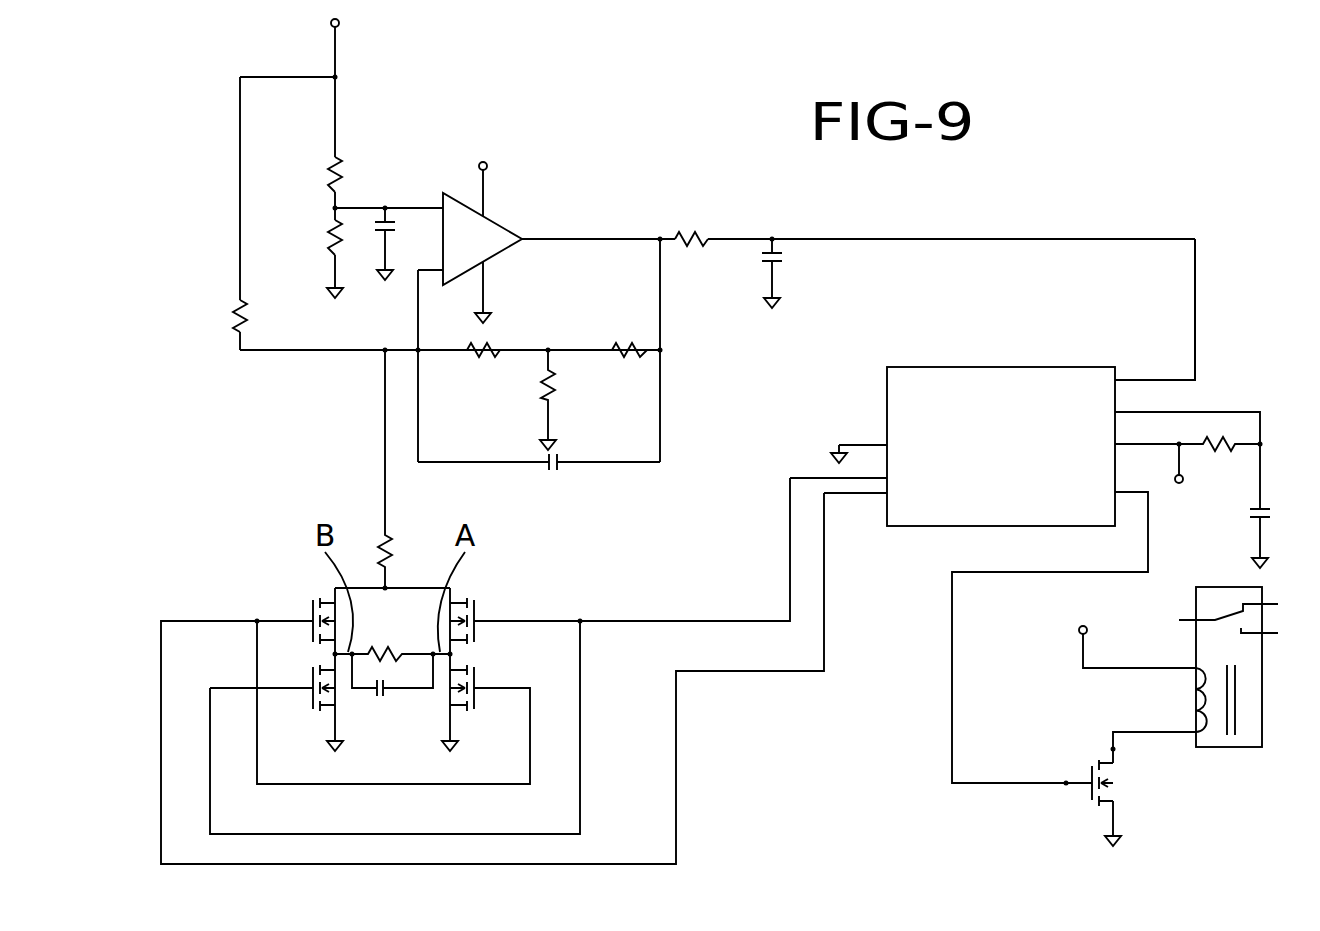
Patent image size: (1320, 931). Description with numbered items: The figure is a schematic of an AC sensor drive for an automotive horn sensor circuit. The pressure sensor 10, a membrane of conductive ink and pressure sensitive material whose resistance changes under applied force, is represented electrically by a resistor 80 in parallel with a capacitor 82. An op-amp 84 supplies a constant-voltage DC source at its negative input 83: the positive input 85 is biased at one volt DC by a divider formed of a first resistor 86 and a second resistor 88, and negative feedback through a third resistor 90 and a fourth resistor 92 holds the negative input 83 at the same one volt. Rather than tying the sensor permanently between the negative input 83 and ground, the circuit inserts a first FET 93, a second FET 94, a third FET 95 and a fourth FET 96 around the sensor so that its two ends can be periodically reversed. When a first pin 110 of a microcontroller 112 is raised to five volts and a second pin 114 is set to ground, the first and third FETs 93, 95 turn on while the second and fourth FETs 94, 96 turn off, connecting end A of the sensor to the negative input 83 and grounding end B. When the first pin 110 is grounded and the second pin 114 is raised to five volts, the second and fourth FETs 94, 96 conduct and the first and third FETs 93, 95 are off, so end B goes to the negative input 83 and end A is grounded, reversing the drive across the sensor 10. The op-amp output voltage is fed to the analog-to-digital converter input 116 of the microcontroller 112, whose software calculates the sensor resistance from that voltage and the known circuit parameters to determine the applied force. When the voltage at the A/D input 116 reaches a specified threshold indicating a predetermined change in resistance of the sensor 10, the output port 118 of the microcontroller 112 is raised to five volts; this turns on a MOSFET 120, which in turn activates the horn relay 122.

The sensor 10 is at (400, 672).
The resistor 80 is at (386, 652).
The capacitor 82 is at (377, 697).
The negative input 83 is at (433, 272).
The op-amp 84 is at (498, 226).
The positive input 85 is at (438, 208).
The first resistor 86 is at (338, 178).
The second resistor 88 is at (328, 233).
The third resistor 90 is at (477, 357).
The fourth resistor 92 is at (623, 357).
The first FET 93 is at (474, 608).
The second FET 94 is at (474, 680).
The third FET 95 is at (313, 697).
The fourth FET 96 is at (313, 610).
The first pin 110 is at (887, 478).
The microcontroller 112 is at (977, 366).
The second pin 114 is at (882, 493).
The analog-to-digital converter input 116 is at (1127, 380).
The output port 118 is at (1115, 485).
The MOSFET 120 is at (1113, 786).
The horn relay 122 is at (1262, 695).